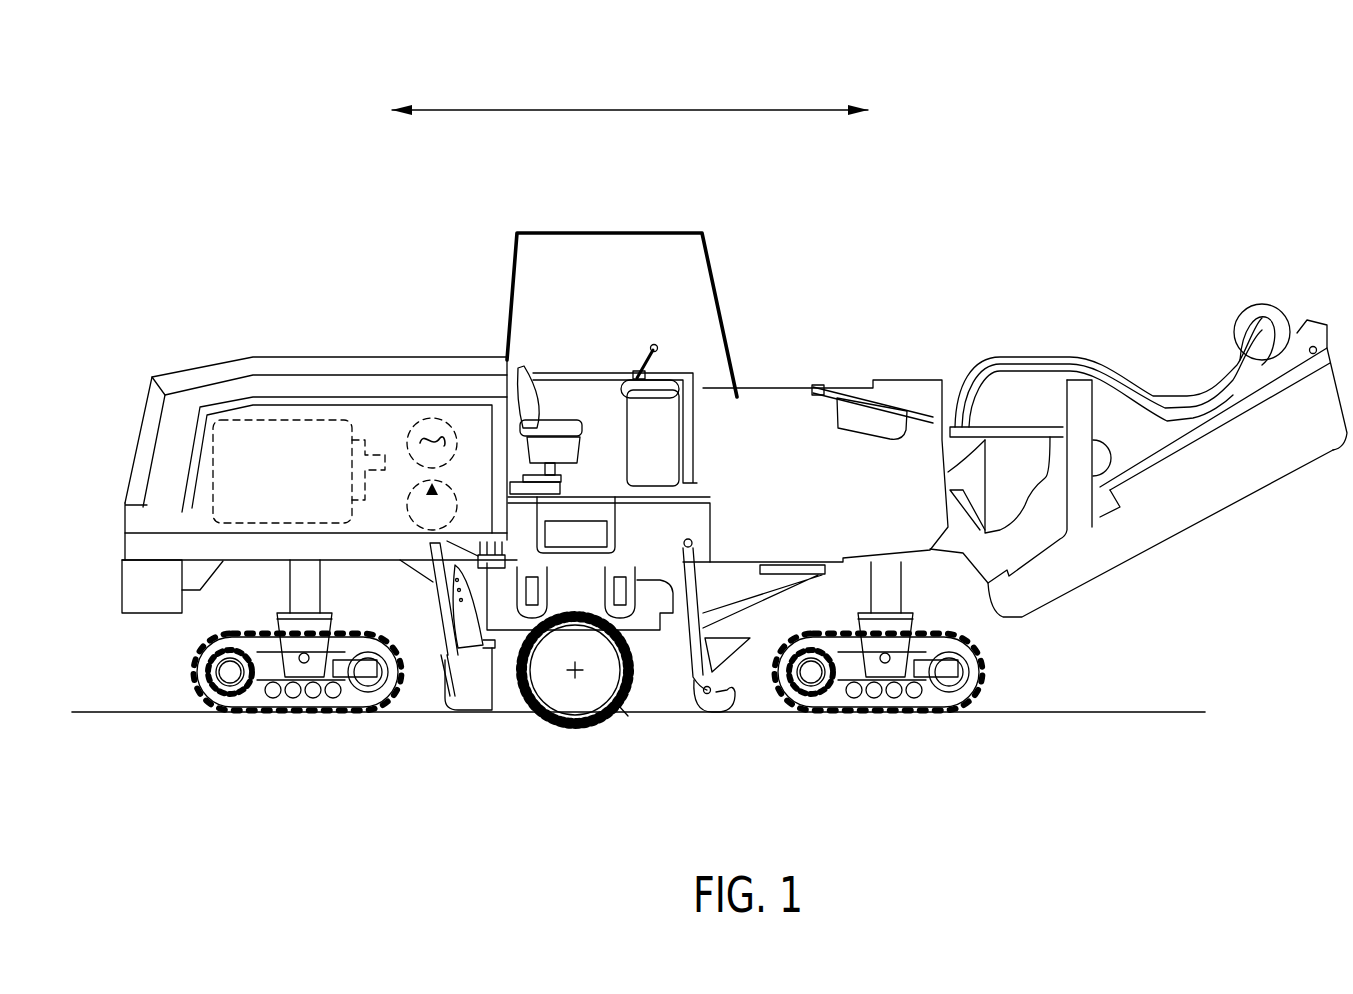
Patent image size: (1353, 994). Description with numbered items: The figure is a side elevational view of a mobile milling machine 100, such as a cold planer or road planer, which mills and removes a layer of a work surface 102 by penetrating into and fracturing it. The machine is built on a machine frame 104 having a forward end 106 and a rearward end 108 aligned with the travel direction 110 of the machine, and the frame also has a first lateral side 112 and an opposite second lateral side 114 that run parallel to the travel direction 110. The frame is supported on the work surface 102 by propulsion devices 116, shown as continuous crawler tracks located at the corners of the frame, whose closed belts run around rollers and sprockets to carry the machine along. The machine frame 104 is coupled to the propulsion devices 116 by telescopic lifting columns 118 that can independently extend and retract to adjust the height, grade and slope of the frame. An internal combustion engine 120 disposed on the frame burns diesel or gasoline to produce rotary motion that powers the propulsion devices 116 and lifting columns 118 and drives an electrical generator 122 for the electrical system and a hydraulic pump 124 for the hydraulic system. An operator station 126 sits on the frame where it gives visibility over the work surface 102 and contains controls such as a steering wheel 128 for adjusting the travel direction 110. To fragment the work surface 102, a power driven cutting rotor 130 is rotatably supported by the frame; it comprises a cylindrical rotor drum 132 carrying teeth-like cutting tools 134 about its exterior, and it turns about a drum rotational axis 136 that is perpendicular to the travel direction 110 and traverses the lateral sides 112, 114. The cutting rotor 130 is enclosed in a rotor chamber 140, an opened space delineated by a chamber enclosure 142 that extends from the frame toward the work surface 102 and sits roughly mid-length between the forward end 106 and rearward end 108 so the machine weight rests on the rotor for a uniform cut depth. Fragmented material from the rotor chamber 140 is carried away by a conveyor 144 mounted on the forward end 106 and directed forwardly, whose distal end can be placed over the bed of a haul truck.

The mobile milling machine 100 is at (1195, 160).
The work surface 102 is at (1114, 700).
The machine frame 104 is at (277, 548).
The forward end 106 is at (990, 455).
The rearward end 108 is at (125, 512).
The travel direction 110 is at (612, 108).
The first lateral side 112 is at (782, 430).
The second lateral side 114 is at (385, 332).
The propulsion devices 116 is at (327, 713).
The lifting columns 118 is at (310, 582).
The internal combustion engine 120 is at (280, 413).
The electrical generator 122 is at (441, 418).
The hydraulic pump 124 is at (441, 538).
The operator station 126 is at (555, 303).
The steering wheel 128 is at (648, 357).
The cutting rotor 130 is at (596, 762).
The rotor drum 132 is at (610, 720).
The cutting tools 134 is at (636, 713).
The drum rotational axis 136 is at (571, 700).
The rotor chamber 140 is at (747, 705).
The chamber enclosure 142 is at (490, 688).
The conveyor 144 is at (1255, 475).